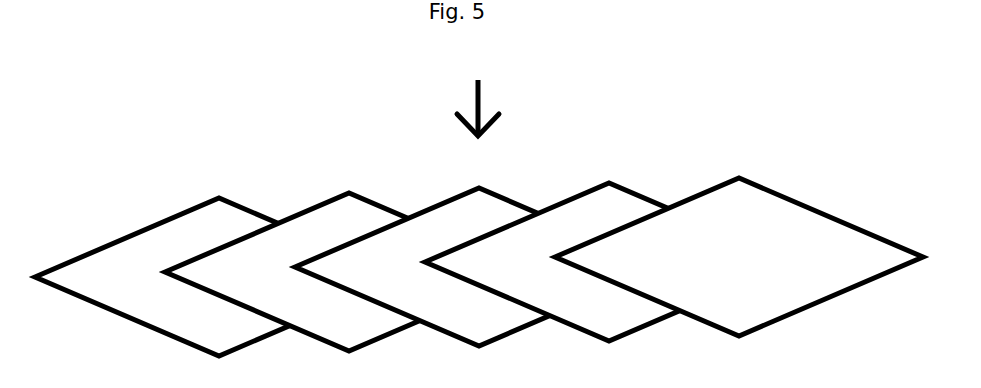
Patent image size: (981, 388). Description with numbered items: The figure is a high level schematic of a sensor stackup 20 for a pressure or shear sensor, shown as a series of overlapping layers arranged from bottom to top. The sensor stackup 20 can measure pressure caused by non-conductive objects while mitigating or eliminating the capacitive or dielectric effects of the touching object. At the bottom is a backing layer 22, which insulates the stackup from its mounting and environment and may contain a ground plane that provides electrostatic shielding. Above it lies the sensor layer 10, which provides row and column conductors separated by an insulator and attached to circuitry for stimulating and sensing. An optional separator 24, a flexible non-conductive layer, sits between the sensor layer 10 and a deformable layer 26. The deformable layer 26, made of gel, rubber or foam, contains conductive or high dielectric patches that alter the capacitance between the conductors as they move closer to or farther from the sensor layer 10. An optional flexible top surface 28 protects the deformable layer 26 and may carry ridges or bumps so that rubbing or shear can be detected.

The sensor stackup 20 is at (478, 97).
The backing layer 22 is at (112, 284).
The sensor layer 10 is at (246, 280).
The separator 24 is at (371, 276).
The deformable layer 26 is at (506, 276).
The top surface 28 is at (621, 268).